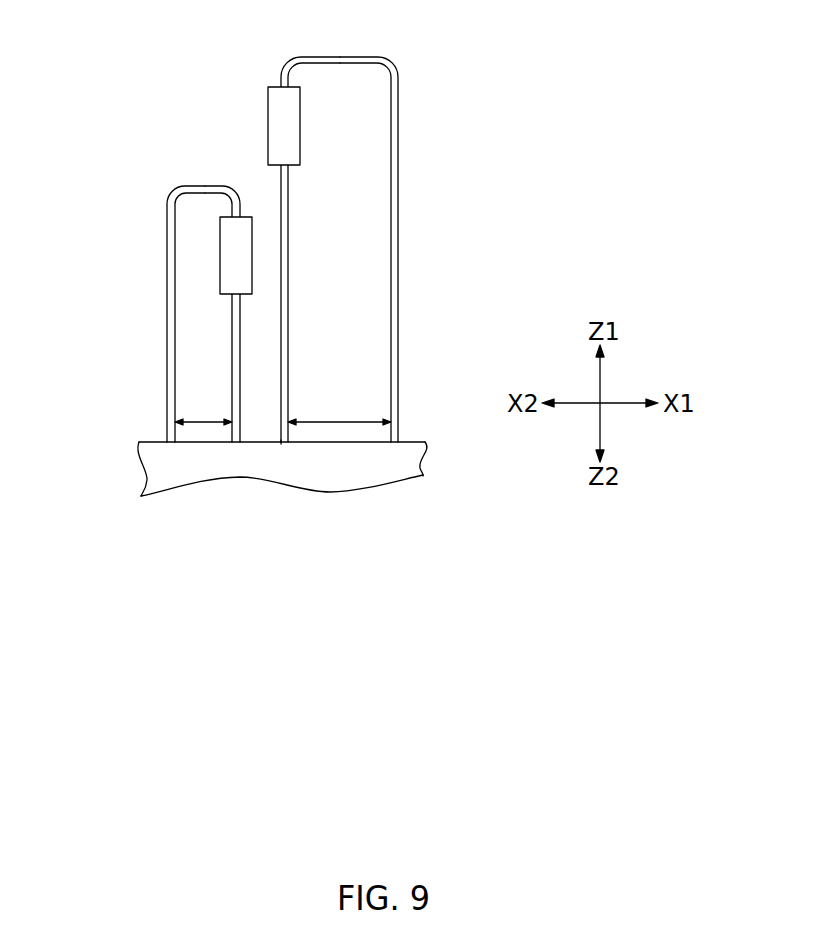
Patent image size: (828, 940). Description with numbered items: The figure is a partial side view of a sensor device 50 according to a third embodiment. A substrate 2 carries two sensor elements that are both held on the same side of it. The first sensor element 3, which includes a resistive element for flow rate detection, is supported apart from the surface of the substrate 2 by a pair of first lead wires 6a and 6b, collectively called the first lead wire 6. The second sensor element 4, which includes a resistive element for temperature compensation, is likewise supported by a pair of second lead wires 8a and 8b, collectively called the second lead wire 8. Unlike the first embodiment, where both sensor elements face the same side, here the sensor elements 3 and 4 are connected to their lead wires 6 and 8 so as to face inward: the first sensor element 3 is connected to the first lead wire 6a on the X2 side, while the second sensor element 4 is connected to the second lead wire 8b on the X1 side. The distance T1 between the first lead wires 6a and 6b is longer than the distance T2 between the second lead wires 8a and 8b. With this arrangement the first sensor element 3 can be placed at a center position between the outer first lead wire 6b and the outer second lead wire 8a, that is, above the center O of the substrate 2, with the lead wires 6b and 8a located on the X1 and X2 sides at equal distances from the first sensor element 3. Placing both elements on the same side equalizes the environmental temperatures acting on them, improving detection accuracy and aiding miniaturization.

The substrate 2 is at (413, 465).
The first sensor element 3 is at (277, 128).
The second sensor element 4 is at (245, 247).
The first lead wire 6 is at (398, 249).
The first lead wire 6a is at (285, 287).
The first lead wire 6b is at (477, 213).
The second lead wire 8 is at (146, 314).
The second lead wire 8a is at (172, 340).
The second lead wire 8b is at (232, 397).
The sensor device 50 is at (283, 269).
The distance between the pair of first lead wires T1 is at (338, 422).
The distance between the pair of second lead wires T2 is at (202, 422).
The center of the substrate O is at (283, 442).